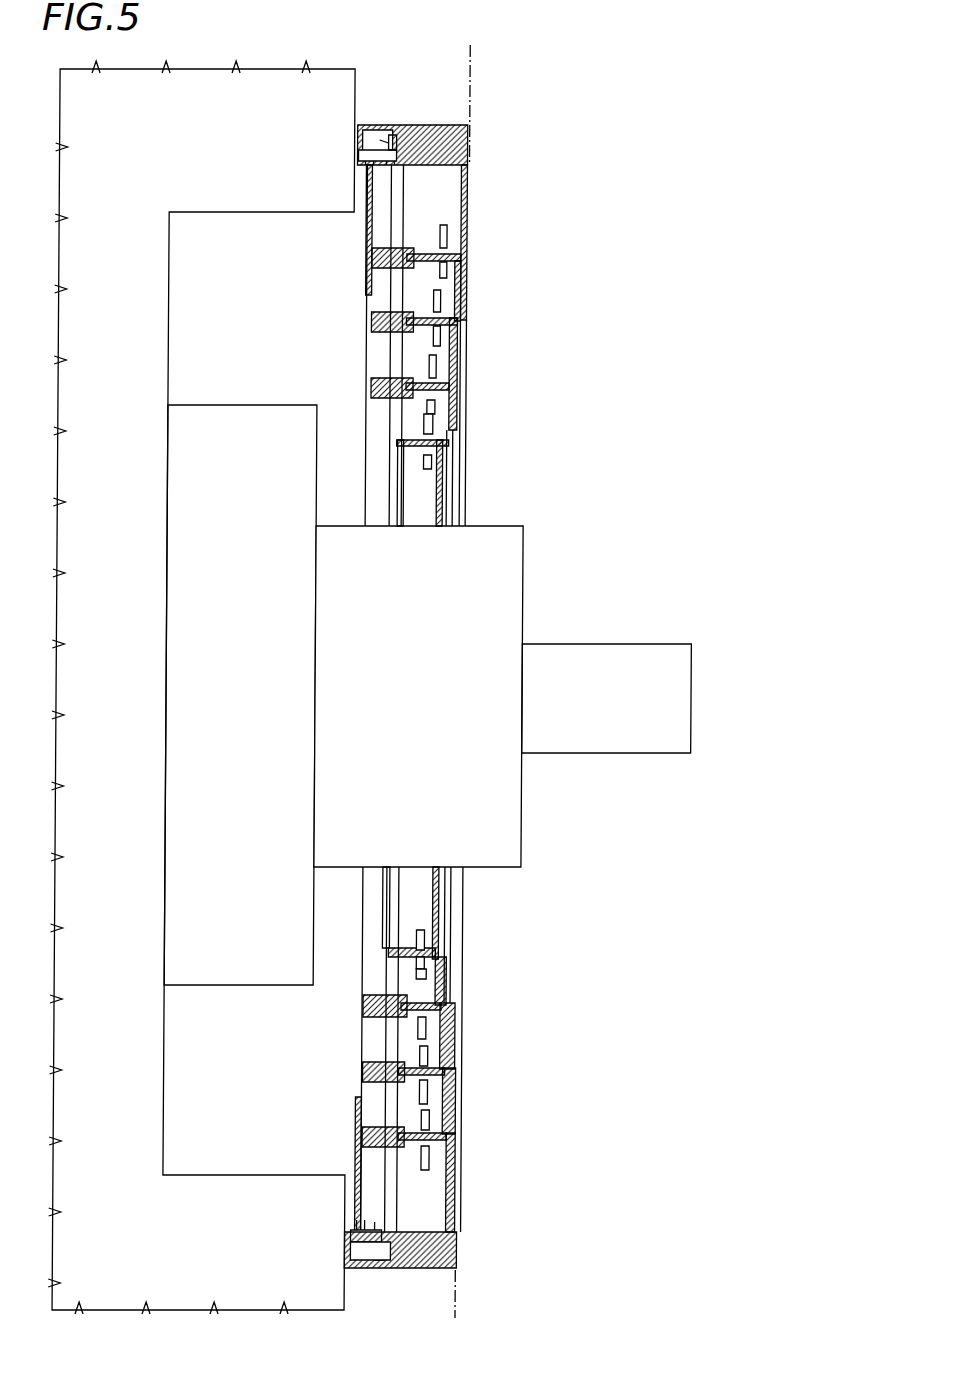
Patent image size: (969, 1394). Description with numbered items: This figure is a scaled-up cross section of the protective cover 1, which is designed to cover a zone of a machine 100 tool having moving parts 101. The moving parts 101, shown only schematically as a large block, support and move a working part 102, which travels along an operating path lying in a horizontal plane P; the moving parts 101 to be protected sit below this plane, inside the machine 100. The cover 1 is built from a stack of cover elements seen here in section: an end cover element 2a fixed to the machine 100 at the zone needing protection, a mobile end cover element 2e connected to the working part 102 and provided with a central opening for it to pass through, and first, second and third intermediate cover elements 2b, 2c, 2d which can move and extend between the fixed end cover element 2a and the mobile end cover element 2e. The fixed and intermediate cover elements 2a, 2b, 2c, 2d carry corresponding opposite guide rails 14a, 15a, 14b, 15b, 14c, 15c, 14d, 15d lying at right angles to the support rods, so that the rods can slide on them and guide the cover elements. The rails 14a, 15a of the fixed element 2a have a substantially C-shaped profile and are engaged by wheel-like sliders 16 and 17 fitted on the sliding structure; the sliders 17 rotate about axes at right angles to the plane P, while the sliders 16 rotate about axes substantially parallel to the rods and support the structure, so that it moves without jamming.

The protective cover 1 is at (586, 486).
The end cover element 2a is at (464, 1207).
The first intermediate cover element 2b is at (446, 1144).
The second intermediate cover element 2c is at (442, 1080).
The third intermediate cover element 2d is at (438, 1016).
The mobile end cover element 2e is at (435, 966).
The guide rail 14a is at (366, 1251).
The guide rail 14b is at (402, 1138).
The guide rail 14c is at (402, 1071).
The guide rail 14d is at (404, 1005).
The guide rail 15a is at (376, 141).
The guide rail 15b is at (416, 250).
The guide rail 15c is at (415, 318).
The guide rail 15d is at (413, 382).
The wheel-like slider 16 is at (360, 153).
The wheel-like slider 17 is at (392, 130).
The horizontal plane P is at (466, 100).
The machine 100 is at (201, 687).
The moving parts 101 is at (240, 695).
The working part 102 is at (668, 628).